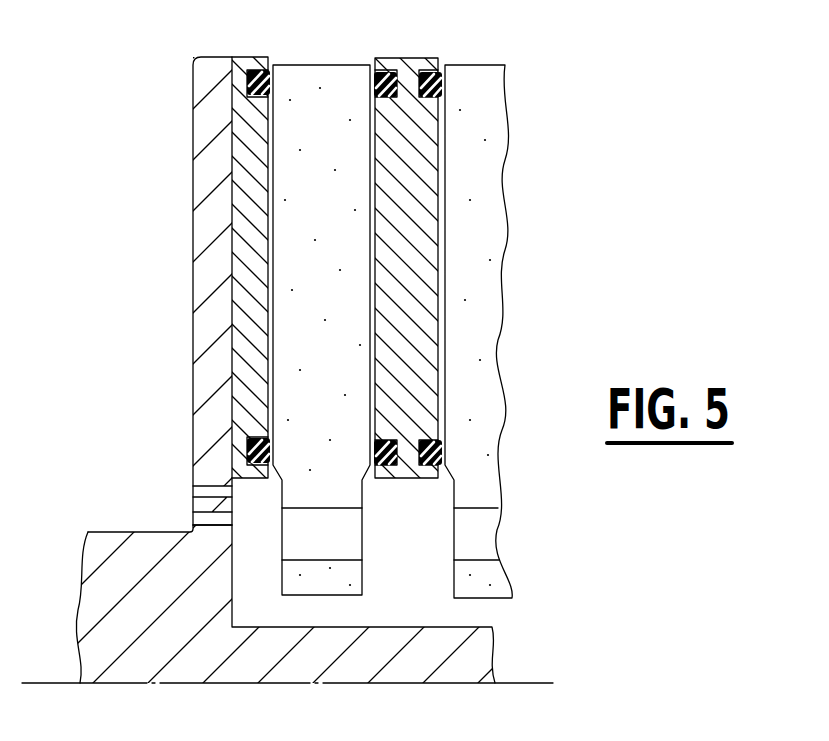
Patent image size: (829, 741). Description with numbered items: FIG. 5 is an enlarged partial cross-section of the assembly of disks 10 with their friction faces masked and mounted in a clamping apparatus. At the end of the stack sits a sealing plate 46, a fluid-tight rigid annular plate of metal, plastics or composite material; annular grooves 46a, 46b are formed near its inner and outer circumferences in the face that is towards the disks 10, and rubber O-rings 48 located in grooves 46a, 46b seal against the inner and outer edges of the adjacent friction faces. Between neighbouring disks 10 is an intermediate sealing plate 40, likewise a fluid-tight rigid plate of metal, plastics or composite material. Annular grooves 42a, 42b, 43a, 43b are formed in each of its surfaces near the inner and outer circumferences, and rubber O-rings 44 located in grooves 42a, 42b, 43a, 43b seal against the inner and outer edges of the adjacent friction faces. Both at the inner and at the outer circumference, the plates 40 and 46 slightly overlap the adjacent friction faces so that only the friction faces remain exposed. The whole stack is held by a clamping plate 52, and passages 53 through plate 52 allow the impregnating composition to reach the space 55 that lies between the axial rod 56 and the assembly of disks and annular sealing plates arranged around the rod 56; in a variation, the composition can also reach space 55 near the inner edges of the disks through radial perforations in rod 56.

The body / rod member 10 is at (297, 295).
The intermediate sealing plate 40 is at (417, 248).
The annular groove 42a is at (396, 97).
The annular groove 42b is at (380, 438).
The annular groove 43a is at (427, 98).
The annular groove 43b is at (429, 439).
The rubber O-ring 44 is at (432, 72).
The sealing plate 46 is at (250, 241).
The annular groove 46a is at (258, 98).
The annular groove 46b is at (253, 437).
The rubber O-ring 48 is at (250, 69).
The plate 52 is at (200, 188).
The passage 53 is at (200, 504).
The space 55 is at (405, 574).
The axial rod 56 is at (473, 658).